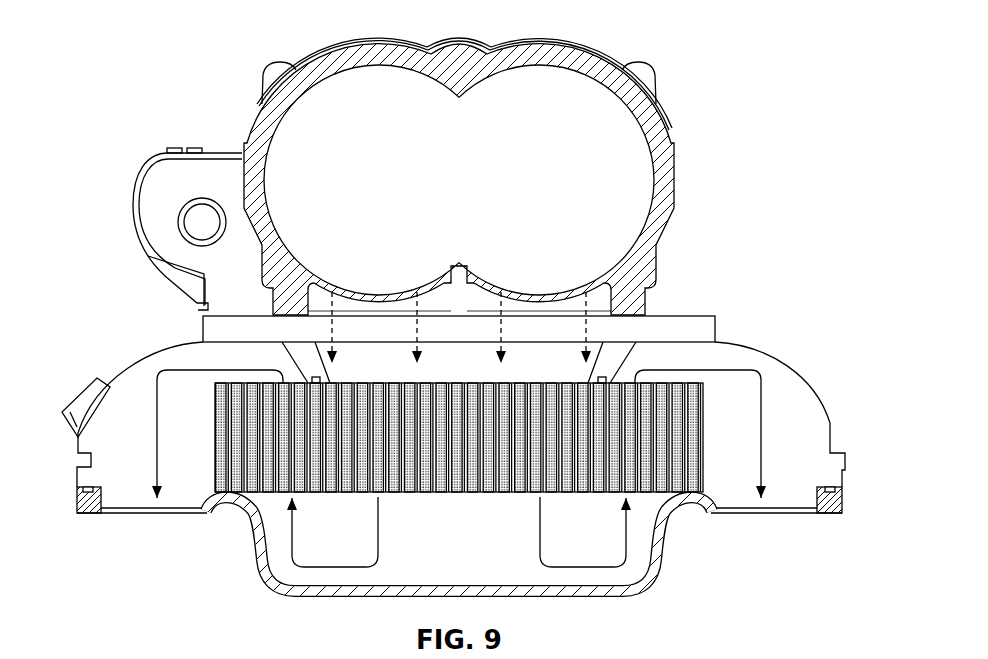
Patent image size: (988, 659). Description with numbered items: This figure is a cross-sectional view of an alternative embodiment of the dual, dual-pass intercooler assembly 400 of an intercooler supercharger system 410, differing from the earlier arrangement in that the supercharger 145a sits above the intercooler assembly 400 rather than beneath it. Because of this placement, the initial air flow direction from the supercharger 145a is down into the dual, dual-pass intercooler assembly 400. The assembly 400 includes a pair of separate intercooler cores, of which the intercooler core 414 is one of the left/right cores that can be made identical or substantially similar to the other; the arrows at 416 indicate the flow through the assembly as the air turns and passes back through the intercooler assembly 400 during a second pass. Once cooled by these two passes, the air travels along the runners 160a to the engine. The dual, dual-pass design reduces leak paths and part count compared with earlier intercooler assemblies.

The dual, dual-pass intercooler assembly 400 is at (142, 30).
The intercooler supercharger system 410 is at (193, 77).
The supercharger 145a is at (672, 123).
The runners 160a is at (125, 500).
The intercooler core 414 is at (342, 493).
The second flow channel 416 is at (590, 493).